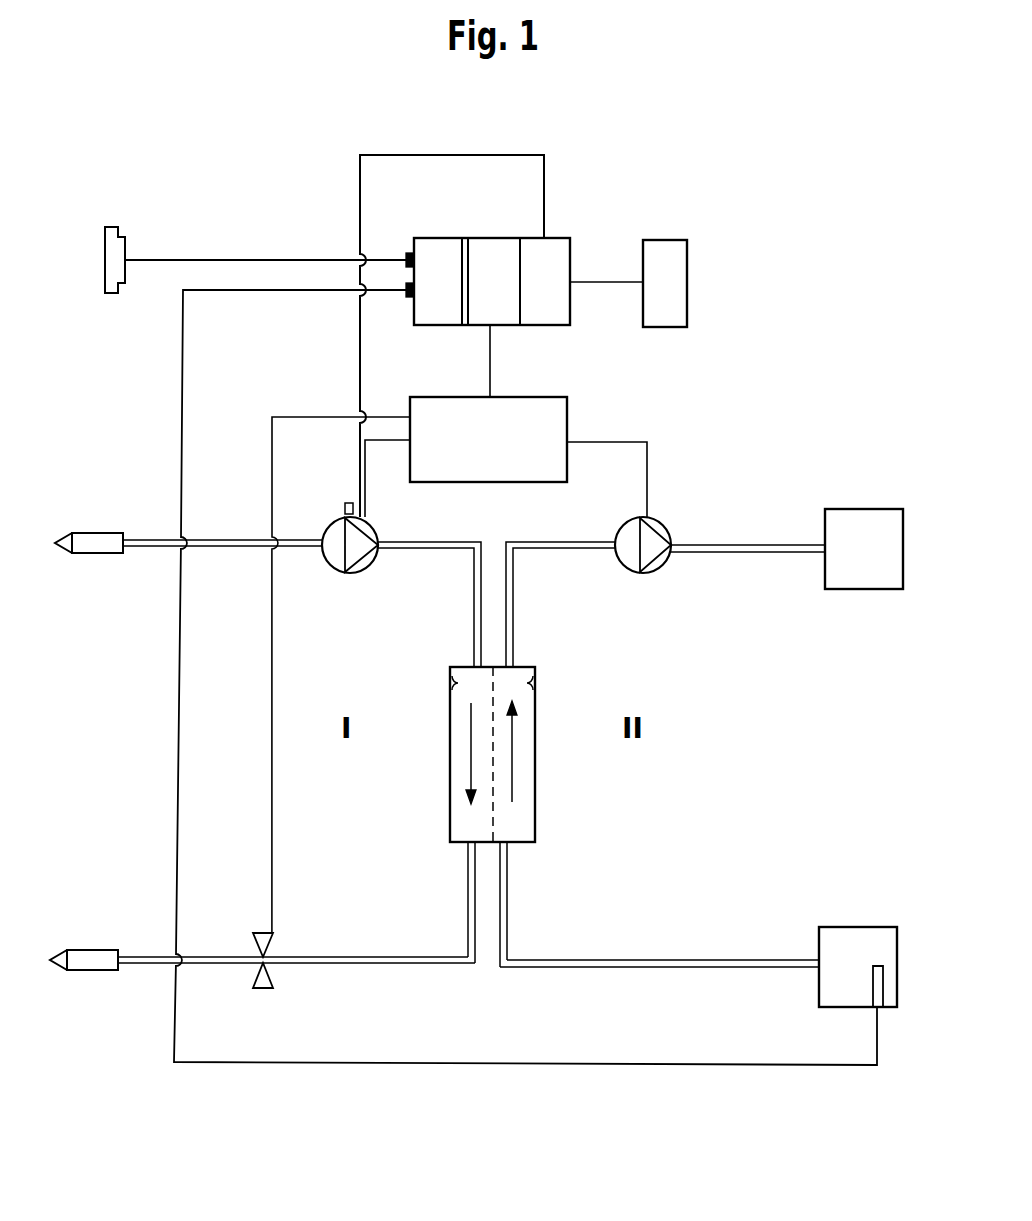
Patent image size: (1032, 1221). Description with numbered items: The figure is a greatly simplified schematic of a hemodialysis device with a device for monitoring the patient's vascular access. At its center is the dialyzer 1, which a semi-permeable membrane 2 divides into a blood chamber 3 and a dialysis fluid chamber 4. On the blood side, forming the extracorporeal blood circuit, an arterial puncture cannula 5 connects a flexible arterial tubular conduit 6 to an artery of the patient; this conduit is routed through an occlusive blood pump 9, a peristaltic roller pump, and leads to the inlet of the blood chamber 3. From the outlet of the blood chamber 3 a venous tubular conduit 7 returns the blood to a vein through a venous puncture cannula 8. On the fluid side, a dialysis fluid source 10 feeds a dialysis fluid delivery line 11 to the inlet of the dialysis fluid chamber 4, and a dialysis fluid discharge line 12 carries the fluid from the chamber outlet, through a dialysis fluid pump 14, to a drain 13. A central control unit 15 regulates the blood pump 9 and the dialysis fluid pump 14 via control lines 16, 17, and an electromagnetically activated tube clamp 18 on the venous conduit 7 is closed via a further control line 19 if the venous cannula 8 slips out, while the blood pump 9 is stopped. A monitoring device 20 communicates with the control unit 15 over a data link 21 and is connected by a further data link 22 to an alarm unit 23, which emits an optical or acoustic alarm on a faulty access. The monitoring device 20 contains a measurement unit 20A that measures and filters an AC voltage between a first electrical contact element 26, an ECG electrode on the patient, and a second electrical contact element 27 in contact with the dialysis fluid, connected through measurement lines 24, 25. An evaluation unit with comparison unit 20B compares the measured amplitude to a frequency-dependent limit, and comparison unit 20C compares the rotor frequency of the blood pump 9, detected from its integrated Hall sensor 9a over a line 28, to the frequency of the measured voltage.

The dialyzer 1 is at (583, 681).
The semi-permeable membrane 2 is at (493, 813).
The blood chamber 3 is at (453, 692).
The dialysis fluid chamber 4 is at (535, 692).
The arterial puncture cannula 5 is at (98, 540).
The arterial tubular conduit 6 is at (222, 540).
The venous tubular conduit 7 is at (380, 965).
The venous puncture cannula 8 is at (92, 957).
The occlusive blood pump 9 is at (372, 566).
The Hall sensor 9a is at (348, 503).
The dialysis fluid source 10 is at (853, 938).
The dialysis fluid delivery line 11 is at (673, 968).
The dialysis fluid discharge line 12 is at (752, 545).
The drain 13 is at (863, 520).
The dialysis fluid pump 14 is at (630, 555).
The central control unit 15 is at (558, 418).
The control line 16 is at (366, 500).
The control line 17 is at (649, 481).
The tube clamp 18 is at (274, 940).
The further control line 19 is at (267, 808).
The monitoring device 20 is at (576, 249).
The measurement unit 20A is at (438, 250).
The comparison unit 20B is at (497, 250).
The comparison unit 20C is at (552, 250).
The data link 21 is at (488, 352).
The further data link 22 is at (606, 290).
The alarm unit 23 is at (676, 283).
The measurement line 24 is at (278, 258).
The measurement line 25 is at (272, 293).
The first electrical contact element 26 is at (128, 246).
The second electrical contact element 27 is at (877, 983).
The line 28 is at (397, 155).